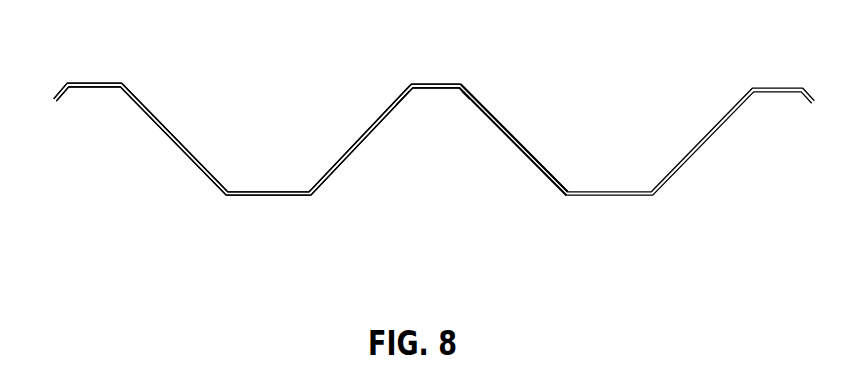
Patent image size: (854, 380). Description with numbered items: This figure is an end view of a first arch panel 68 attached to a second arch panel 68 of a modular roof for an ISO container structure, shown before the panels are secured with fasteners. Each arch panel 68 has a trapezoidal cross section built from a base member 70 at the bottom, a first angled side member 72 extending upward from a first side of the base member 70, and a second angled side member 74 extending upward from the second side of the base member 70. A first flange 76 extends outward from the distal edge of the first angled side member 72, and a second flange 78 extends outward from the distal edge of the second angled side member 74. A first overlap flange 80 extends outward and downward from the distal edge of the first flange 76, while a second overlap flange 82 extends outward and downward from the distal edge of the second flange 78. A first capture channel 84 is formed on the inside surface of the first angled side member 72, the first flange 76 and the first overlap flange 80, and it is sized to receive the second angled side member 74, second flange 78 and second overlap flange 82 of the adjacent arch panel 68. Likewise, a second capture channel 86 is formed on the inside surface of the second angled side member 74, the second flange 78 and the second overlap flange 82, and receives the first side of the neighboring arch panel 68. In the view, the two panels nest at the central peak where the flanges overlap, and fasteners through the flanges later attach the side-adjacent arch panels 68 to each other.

The arch panel 68 is at (279, 93).
The base member 70 is at (257, 190).
The first angled side member 72 is at (178, 145).
The second angled side member 74 is at (372, 126).
The first flange 76 is at (98, 88).
The second flange 78 is at (436, 90).
The first overlap flange 80 is at (55, 93).
The second overlap flange 82 is at (462, 97).
The first capture channel 84 is at (110, 107).
The second capture channel 86 is at (418, 100).